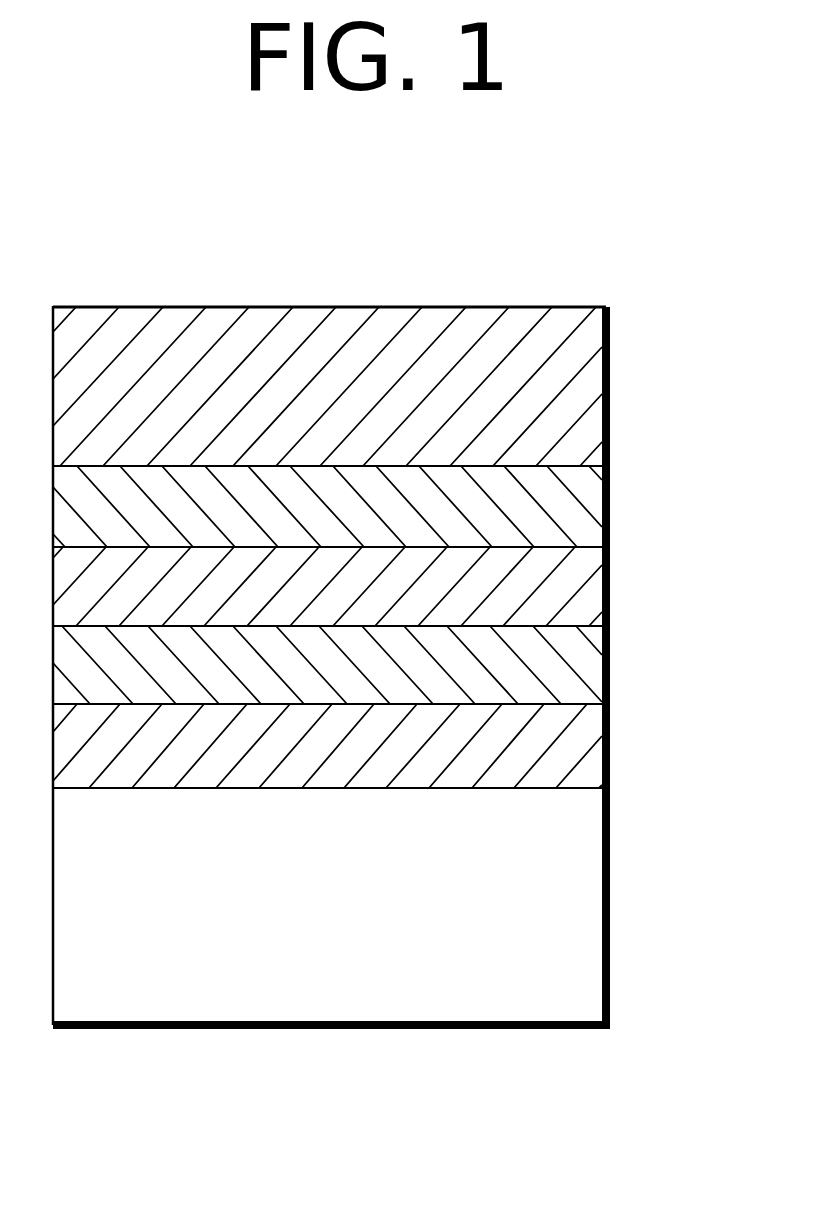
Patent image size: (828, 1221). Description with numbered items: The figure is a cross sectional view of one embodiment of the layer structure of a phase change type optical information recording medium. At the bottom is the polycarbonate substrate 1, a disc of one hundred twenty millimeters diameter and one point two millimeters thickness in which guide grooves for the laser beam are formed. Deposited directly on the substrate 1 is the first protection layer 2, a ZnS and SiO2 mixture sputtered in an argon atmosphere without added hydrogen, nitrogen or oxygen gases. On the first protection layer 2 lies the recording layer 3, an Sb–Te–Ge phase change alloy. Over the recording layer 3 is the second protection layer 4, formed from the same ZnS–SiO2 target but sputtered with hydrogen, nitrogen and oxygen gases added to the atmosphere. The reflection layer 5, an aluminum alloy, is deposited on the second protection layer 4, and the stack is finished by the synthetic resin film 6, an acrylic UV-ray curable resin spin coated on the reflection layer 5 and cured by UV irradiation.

The polycarbonate substrate 1 is at (565, 907).
The first protection layer 2 is at (565, 748).
The recording layer 3 is at (565, 682).
The second protection layer 4 is at (565, 592).
The reflection layer 5 is at (565, 517).
The synthetic resin film 6 is at (565, 373).